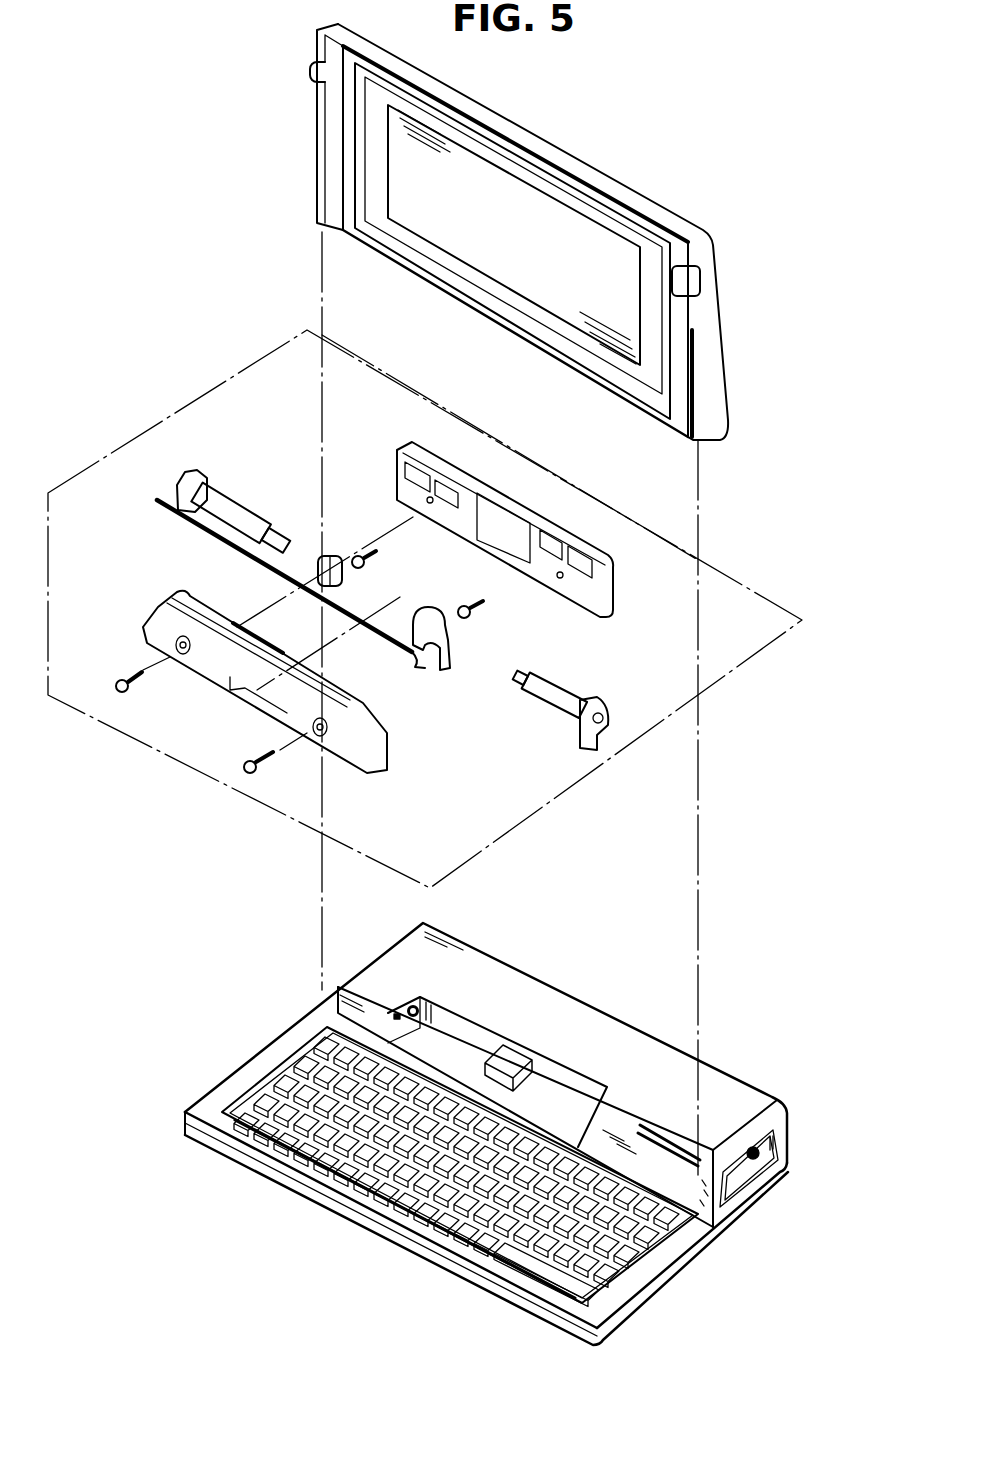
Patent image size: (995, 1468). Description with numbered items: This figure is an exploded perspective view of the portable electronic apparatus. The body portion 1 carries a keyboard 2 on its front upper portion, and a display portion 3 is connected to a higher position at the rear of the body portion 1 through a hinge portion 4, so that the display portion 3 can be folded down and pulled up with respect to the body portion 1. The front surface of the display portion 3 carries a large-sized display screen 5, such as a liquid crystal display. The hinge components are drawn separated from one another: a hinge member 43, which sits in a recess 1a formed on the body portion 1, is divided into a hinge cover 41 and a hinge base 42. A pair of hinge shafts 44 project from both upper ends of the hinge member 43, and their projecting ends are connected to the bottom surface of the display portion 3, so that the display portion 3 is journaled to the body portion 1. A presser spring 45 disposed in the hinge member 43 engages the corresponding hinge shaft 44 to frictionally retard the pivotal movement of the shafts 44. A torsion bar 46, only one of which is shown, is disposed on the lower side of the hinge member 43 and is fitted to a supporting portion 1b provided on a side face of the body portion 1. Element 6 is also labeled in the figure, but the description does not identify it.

The body portion 1 is at (630, 1053).
The recess 1a is at (450, 1060).
The supporting portions 1b is at (413, 1006).
The keyboard 2 is at (313, 1077).
The display portion 3 is at (668, 222).
The hinge portion 4 is at (573, 765).
The display screen 5 is at (510, 190).
The hinge pin 6 is at (305, 72).
The hinge cover 41 is at (537, 512).
The hinge base 42 is at (225, 680).
The hinge member 43 is at (227, 617).
The hinge shafts 44 is at (213, 493).
The presser spring 45 is at (327, 553).
The torsion bars 46 is at (233, 565).